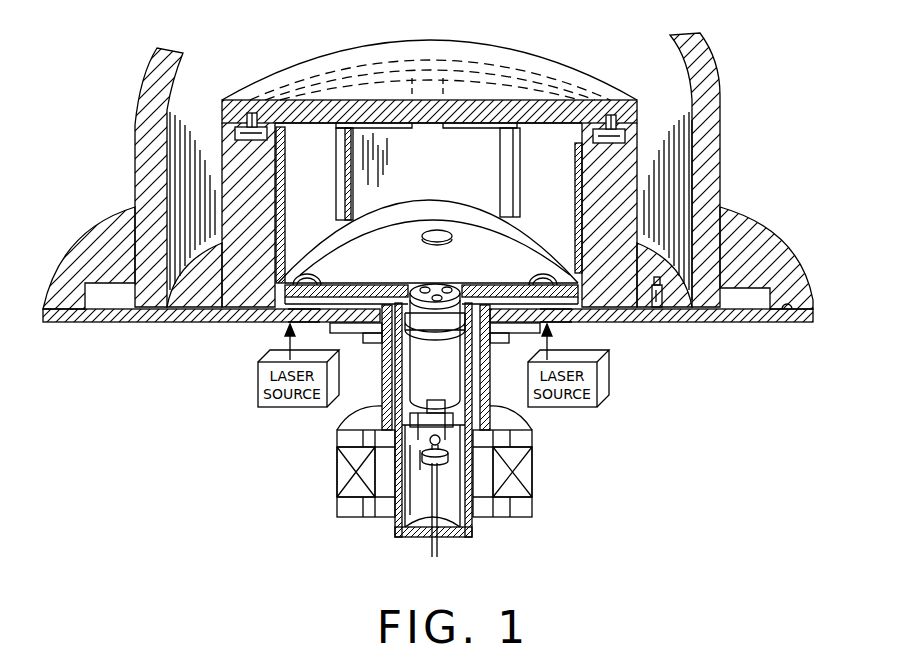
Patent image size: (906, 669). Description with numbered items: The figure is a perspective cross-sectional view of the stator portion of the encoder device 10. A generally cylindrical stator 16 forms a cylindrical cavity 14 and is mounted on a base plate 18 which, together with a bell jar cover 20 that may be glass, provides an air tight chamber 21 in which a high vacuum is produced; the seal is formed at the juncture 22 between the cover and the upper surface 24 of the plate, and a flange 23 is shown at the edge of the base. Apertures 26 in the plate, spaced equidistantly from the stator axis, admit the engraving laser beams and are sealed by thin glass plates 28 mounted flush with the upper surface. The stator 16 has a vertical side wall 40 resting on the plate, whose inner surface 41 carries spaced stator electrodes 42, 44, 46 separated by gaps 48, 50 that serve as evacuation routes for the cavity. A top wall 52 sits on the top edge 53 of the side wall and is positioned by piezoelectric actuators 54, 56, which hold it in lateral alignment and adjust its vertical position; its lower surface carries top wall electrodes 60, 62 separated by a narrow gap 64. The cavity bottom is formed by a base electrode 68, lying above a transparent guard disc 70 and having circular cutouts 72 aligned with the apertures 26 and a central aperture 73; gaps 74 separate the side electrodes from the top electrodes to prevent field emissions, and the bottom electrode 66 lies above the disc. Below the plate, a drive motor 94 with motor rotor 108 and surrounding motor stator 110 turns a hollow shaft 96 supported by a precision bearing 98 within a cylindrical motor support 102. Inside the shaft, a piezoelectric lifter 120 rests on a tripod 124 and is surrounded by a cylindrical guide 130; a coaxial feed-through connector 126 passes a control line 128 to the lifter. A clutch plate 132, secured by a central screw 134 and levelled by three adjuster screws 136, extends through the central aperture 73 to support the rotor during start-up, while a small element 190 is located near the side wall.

The encoder device 10 is at (228, 470).
The cylindrical cavity 14 is at (302, 197).
The stator 16 is at (220, 162).
The base plate 18 is at (715, 330).
The bell jar cover 20 is at (712, 198).
The air tight chamber 21 is at (690, 135).
The juncture 22 is at (112, 318).
The flange 23 is at (164, 320).
The upper surface 24 is at (792, 323).
The apertures 26 is at (293, 323).
The thin glass plates 28 is at (311, 323).
The side wall 40 is at (620, 172).
The inner surface 41 is at (364, 218).
The stator electrode 42 is at (315, 227).
The stator electrode 44 is at (402, 216).
The stator electrode 46 is at (547, 223).
The gap 48 is at (354, 178).
The gap 50 is at (510, 173).
The top wall 52 is at (560, 75).
The top edge 53 is at (270, 100).
The piezoelectric actuator 54 is at (238, 128).
The piezoelectric actuator 56 is at (633, 134).
The top wall electrode 60 is at (400, 128).
The top wall electrode 62 is at (481, 128).
The gap 64 is at (427, 95).
The bottom electrode 66 is at (273, 284).
The base electrode 68 is at (387, 287).
The guard disc 70 is at (366, 323).
The circular cutouts 72 is at (312, 285).
The central aperture 73 is at (412, 283).
The gap 74 is at (433, 210).
The drive motor 94 is at (328, 505).
The hollow shaft 96 is at (467, 530).
The precision bearing 98 is at (340, 433).
The motor support 102 is at (392, 372).
The motor rotor 108 is at (378, 485).
The motor stator 110 is at (340, 457).
The piezoelectric lifter 120 is at (424, 408).
The tripod 124 is at (453, 425).
The coaxial electrical feed-through connector 126 is at (446, 456).
The control line 128 is at (430, 548).
The cylindrical guide 130 is at (458, 380).
The clutch plate 132 is at (447, 287).
The central screw 134 is at (460, 281).
The adjuster screws 136 is at (428, 285).
The sensor 190 is at (653, 320).